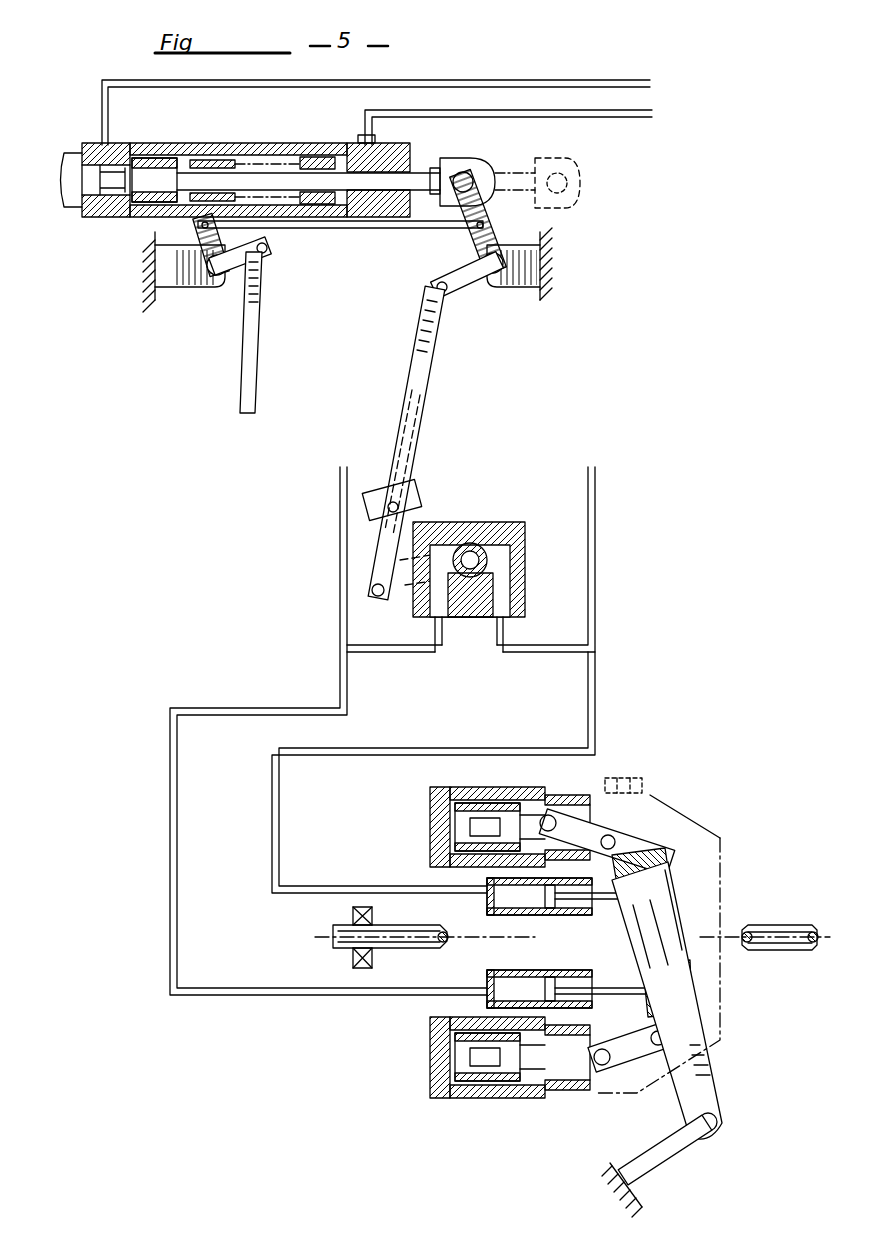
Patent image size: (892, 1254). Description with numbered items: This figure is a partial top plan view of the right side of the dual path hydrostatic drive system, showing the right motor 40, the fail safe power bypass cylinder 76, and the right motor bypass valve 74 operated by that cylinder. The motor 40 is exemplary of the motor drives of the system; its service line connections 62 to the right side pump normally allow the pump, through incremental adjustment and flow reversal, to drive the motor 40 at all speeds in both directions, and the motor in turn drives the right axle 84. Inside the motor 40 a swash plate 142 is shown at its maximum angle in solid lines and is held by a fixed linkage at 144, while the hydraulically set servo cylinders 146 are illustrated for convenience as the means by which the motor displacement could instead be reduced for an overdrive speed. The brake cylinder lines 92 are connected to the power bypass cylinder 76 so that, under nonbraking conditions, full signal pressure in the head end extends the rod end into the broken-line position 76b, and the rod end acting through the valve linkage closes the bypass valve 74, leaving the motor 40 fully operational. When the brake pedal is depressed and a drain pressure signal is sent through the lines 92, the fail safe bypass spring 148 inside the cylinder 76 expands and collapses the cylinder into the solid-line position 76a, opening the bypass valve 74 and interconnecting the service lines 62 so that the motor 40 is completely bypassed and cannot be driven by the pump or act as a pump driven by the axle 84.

The right motor 40 is at (653, 795).
The service line connections 62 is at (352, 748).
The right motor bypass valve 74 is at (470, 618).
The power bypass cylinder 76 is at (305, 224).
The power bypass cylinder position 76a is at (242, 278).
The extended cylinder position 76b is at (580, 197).
The right axle 84 is at (780, 950).
The brake cylinder lines 92 is at (357, 88).
The swash plate 142 is at (620, 882).
The fixed linkage 144 is at (655, 1178).
The hydraulic cylinder 146 is at (608, 977).
The fail safe bypass spring 148 is at (188, 143).